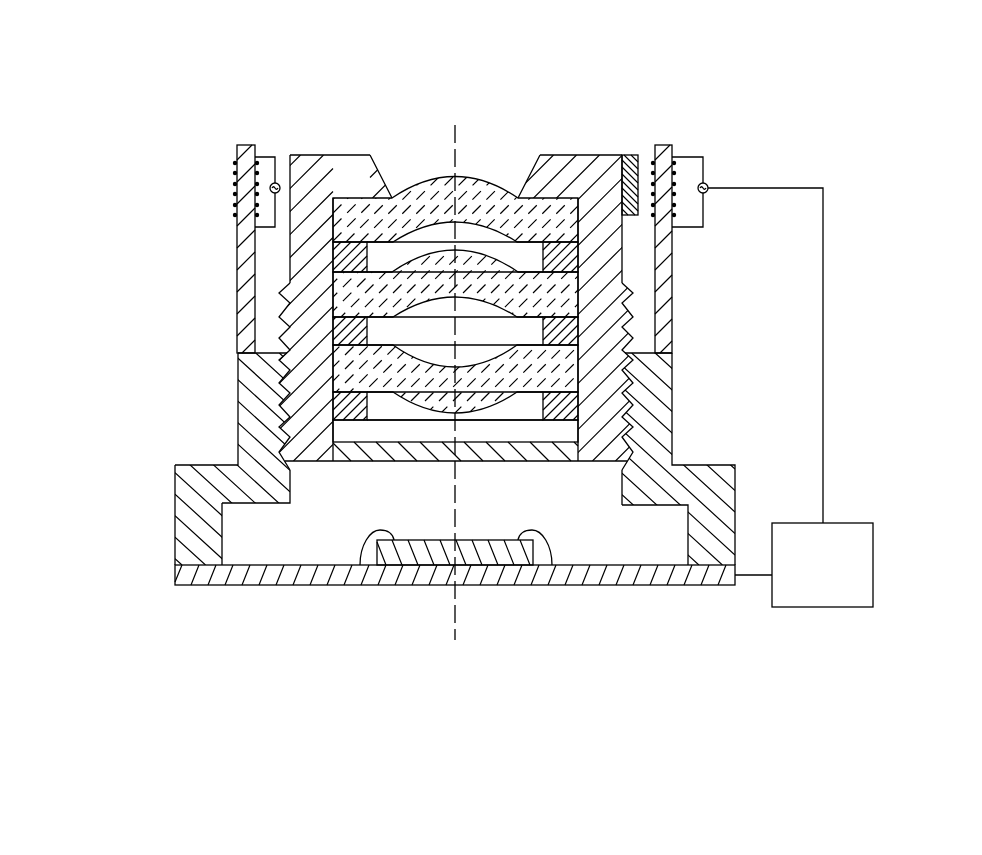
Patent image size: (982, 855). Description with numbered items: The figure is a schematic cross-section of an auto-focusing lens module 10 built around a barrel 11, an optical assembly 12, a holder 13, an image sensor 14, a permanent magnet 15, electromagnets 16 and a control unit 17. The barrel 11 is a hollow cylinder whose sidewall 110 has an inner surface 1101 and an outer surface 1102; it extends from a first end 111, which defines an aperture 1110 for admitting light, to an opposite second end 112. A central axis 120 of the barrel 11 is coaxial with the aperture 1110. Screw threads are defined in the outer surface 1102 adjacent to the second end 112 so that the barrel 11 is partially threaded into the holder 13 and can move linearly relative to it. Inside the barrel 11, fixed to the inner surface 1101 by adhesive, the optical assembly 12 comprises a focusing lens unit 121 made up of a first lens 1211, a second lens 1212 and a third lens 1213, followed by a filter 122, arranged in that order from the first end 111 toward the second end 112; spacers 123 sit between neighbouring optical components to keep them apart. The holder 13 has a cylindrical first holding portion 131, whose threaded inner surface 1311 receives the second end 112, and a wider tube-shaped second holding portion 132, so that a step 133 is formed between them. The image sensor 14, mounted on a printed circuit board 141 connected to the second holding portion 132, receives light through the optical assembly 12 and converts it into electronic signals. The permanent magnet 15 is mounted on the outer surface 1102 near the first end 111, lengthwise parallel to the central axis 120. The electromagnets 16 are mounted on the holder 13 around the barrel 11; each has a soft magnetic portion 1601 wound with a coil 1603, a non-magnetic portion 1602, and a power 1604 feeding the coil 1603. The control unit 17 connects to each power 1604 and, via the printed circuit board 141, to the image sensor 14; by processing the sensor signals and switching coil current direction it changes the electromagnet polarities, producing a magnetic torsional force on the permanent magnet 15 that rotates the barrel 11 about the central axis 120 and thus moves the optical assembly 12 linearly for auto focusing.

The lens module 10 is at (464, 25).
The barrel 11 is at (303, 130).
The sidewall 110 is at (603, 322).
The first end 111 is at (347, 145).
The second end 112 is at (318, 472).
The inner surface 1101 is at (573, 210).
The outer surface 1102 is at (620, 245).
The aperture 1110 is at (392, 155).
The spacers 123 is at (600, 378).
The optical assembly 12 is at (84, 300).
The focusing lens unit 121 is at (148, 265).
The first lens 1211 is at (355, 226).
The second lens 1212 is at (358, 293).
The third lens 1213 is at (360, 355).
The filter 122 is at (345, 415).
The holder 13 is at (83, 430).
The first holding portion 131 is at (201, 428).
The second holding portion 132 is at (162, 518).
The step 133 is at (698, 464).
The inner surface 1311 is at (620, 487).
The image sensor 14 is at (483, 553).
The printed circuit board 141 is at (592, 573).
The permanent magnet 15 is at (630, 155).
The electromagnets 16 is at (115, 180).
The soft magnetic portion 1601 is at (240, 183).
The non-magnetic portion 1602 is at (240, 247).
The coil 1603 is at (237, 155).
The power 1604 is at (706, 184).
The control unit 17 is at (823, 607).
The central axis 120 is at (457, 133).